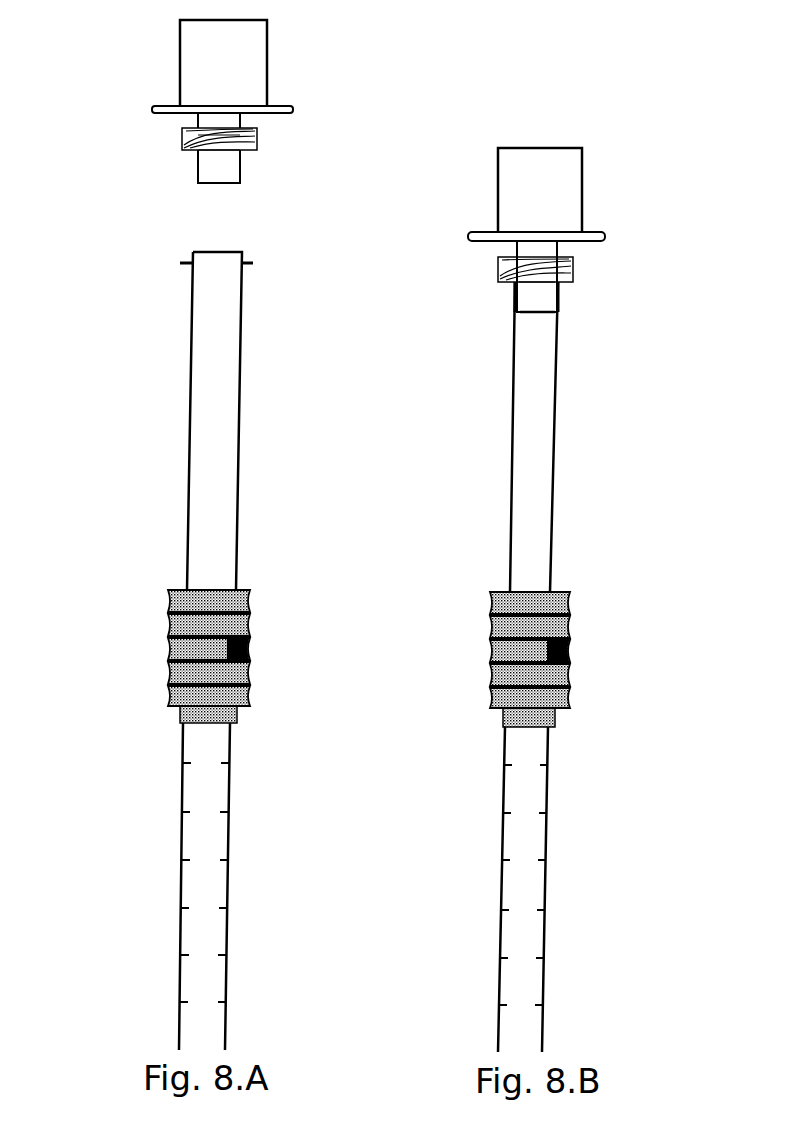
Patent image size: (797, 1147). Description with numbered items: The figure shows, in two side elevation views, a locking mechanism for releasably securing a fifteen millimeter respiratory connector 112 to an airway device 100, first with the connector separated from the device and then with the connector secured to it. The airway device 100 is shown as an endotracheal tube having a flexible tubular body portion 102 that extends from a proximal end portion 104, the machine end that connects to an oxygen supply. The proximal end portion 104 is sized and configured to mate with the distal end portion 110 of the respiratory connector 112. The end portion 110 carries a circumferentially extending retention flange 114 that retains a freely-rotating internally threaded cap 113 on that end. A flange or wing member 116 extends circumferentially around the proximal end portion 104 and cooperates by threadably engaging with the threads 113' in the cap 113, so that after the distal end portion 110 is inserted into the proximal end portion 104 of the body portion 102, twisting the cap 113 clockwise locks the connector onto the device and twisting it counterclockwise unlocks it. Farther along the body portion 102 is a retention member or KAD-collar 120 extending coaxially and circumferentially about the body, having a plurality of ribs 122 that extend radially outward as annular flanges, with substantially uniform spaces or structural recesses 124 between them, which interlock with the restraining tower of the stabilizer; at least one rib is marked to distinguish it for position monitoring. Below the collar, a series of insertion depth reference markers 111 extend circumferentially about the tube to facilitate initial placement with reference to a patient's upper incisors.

In FIG. 8.A, the airway device 100 is at (189, 636).
In FIG. 8.B, the airway device 100 is at (530, 666).
In FIG. 8.A, the body portion 102 is at (182, 406).
In FIG. 8.B, the body portion 102 is at (504, 436).
In FIG. 8.A, the proximal end portion 104 is at (232, 302).
In FIG. 8.B, the proximal end portion 104 is at (522, 342).
In FIG. 8.A, the distal end portion of respiratory connector 110 is at (232, 172).
In FIG. 8.B, the distal end portion of respiratory connector 110 is at (545, 300).
In FIG. 8.A, the insertion depth reference markers 111 is at (210, 848).
In FIG. 8.B, the insertion depth reference markers 111 is at (530, 850).
In FIG. 8.A, the respiratory connector 112 is at (158, 72).
In FIG. 8.B, the respiratory connector 112 is at (475, 190).
In FIG. 8.A, the internally threaded cap 113 is at (171, 132).
In FIG. 8.B, the internally threaded cap 113 is at (491, 282).
In FIG. 8.A, the threads 113' is at (302, 123).
In FIG. 8.A, the retention flange 114 is at (225, 140).
In FIG. 8.B, the retention flange 114 is at (540, 285).
In FIG. 8.A, the flange or wing member 116 is at (252, 262).
In FIG. 8.B, the flange or wing member 116 is at (562, 280).
In FIG. 8.A, the KAD-collar 120 is at (149, 639).
In FIG. 8.B, the KAD-collar 120 is at (521, 654).
In FIG. 8.A, the ribs 122 is at (170, 625).
In FIG. 8.B, the ribs 122 is at (530, 675).
In FIG. 8.A, the structural recesses 124 is at (170, 685).
In FIG. 8.B, the structural recesses 124 is at (503, 615).